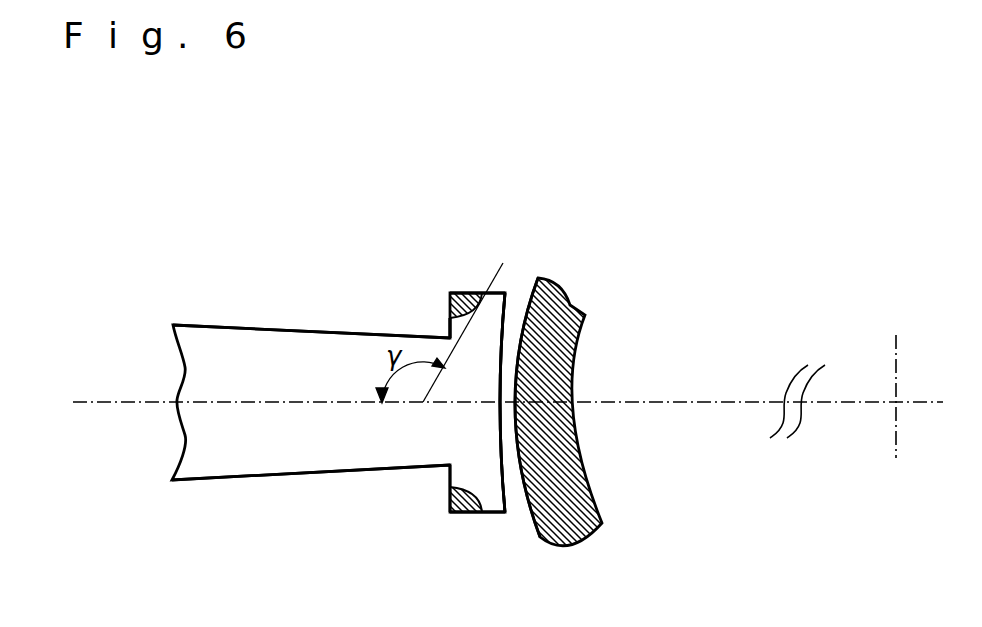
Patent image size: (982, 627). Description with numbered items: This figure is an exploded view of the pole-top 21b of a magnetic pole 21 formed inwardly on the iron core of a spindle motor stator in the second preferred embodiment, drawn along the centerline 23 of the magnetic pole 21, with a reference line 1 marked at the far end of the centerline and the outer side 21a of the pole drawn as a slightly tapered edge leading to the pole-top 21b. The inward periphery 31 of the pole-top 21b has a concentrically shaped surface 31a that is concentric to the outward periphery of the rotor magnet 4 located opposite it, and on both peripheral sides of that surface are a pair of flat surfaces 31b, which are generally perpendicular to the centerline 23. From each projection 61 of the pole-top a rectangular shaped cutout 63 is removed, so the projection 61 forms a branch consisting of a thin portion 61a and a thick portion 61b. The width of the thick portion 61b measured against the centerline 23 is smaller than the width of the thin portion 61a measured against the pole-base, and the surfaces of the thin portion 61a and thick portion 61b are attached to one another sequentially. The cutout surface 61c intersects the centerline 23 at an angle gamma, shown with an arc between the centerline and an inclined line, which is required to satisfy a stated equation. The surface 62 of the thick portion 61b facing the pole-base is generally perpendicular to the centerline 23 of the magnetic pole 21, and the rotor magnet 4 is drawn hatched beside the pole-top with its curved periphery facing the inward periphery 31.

The image plane / imaging surface 1 is at (895, 402).
The rotor magnet 4 is at (565, 482).
The magnetic pole 21 is at (345, 192).
The outer peripheral surface of lens 21a is at (260, 332).
The pole-top 21b is at (475, 347).
The centerline 23 is at (130, 402).
The inward periphery 31 is at (797, 183).
The concentrically shaped surface 31a is at (517, 360).
The flat surfaces 31b is at (505, 316).
The projection 61 is at (243, 508).
The thin portion 61a is at (480, 500).
The thick portion 61b is at (449, 487).
The cutout surface 61c is at (480, 292).
The surface of thick portion 62 is at (449, 465).
The rectangular shaped cutout 63 is at (455, 291).